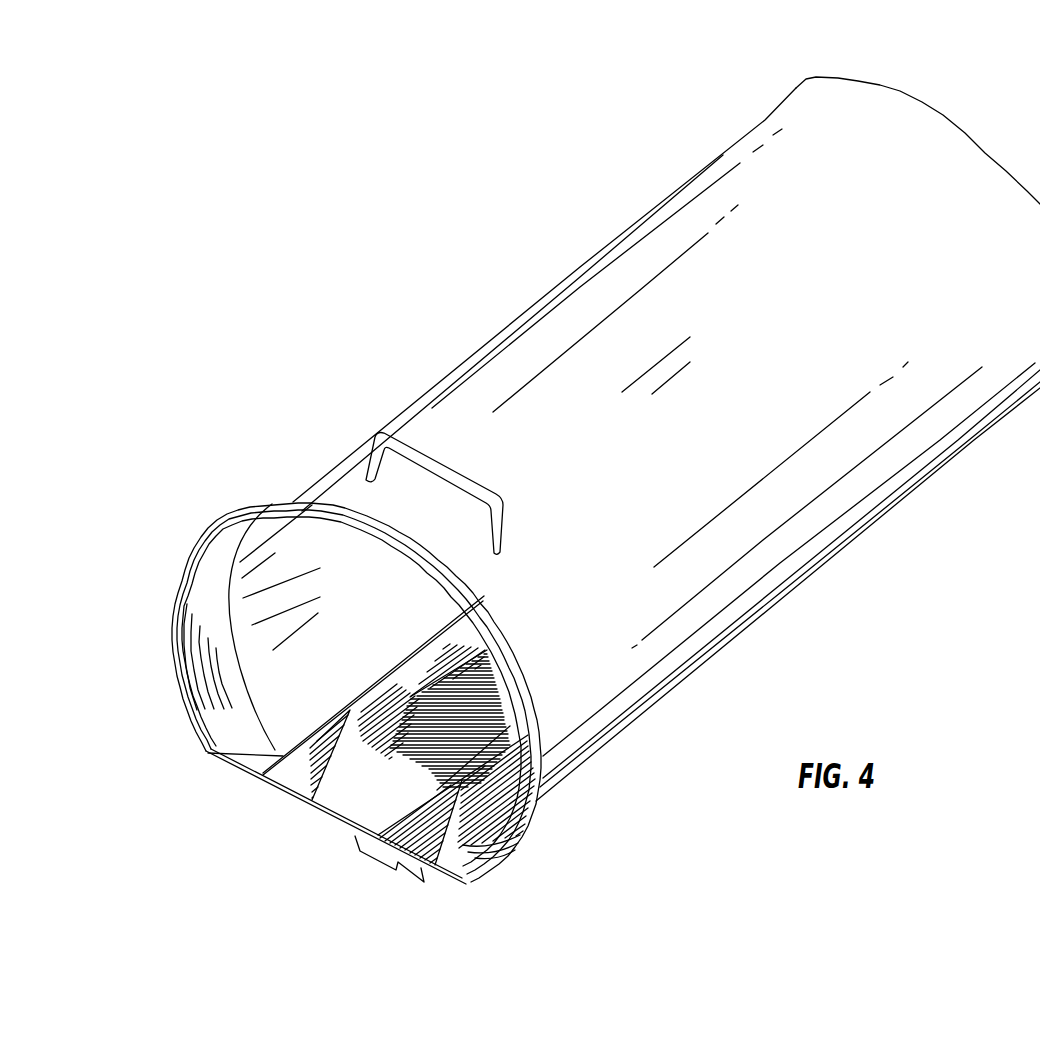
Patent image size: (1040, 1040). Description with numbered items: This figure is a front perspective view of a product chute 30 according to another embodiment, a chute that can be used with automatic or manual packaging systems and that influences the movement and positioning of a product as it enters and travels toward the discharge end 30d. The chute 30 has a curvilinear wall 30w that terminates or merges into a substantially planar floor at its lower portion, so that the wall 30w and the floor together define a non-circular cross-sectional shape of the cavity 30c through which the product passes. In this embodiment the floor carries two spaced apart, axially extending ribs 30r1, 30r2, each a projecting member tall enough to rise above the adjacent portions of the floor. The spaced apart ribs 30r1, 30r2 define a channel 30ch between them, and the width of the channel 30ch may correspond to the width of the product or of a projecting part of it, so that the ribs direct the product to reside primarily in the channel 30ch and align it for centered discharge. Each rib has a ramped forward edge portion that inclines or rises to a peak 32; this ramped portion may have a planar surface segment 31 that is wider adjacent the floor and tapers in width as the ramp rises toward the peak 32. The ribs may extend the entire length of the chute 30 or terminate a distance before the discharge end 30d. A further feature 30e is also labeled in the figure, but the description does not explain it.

The product chute 30 is at (578, 250).
The discharge end 30d is at (735, 138).
The retaining clip 30e is at (347, 483).
The curvilinear wall 30w is at (262, 577).
The cavity 30c is at (298, 664).
The planar surface segment 31 is at (208, 753).
The peak 32 is at (395, 672).
The first axially extending rib 30r1 is at (305, 770).
The second axially extending rib 30r2 is at (390, 856).
The channel 30ch is at (372, 794).